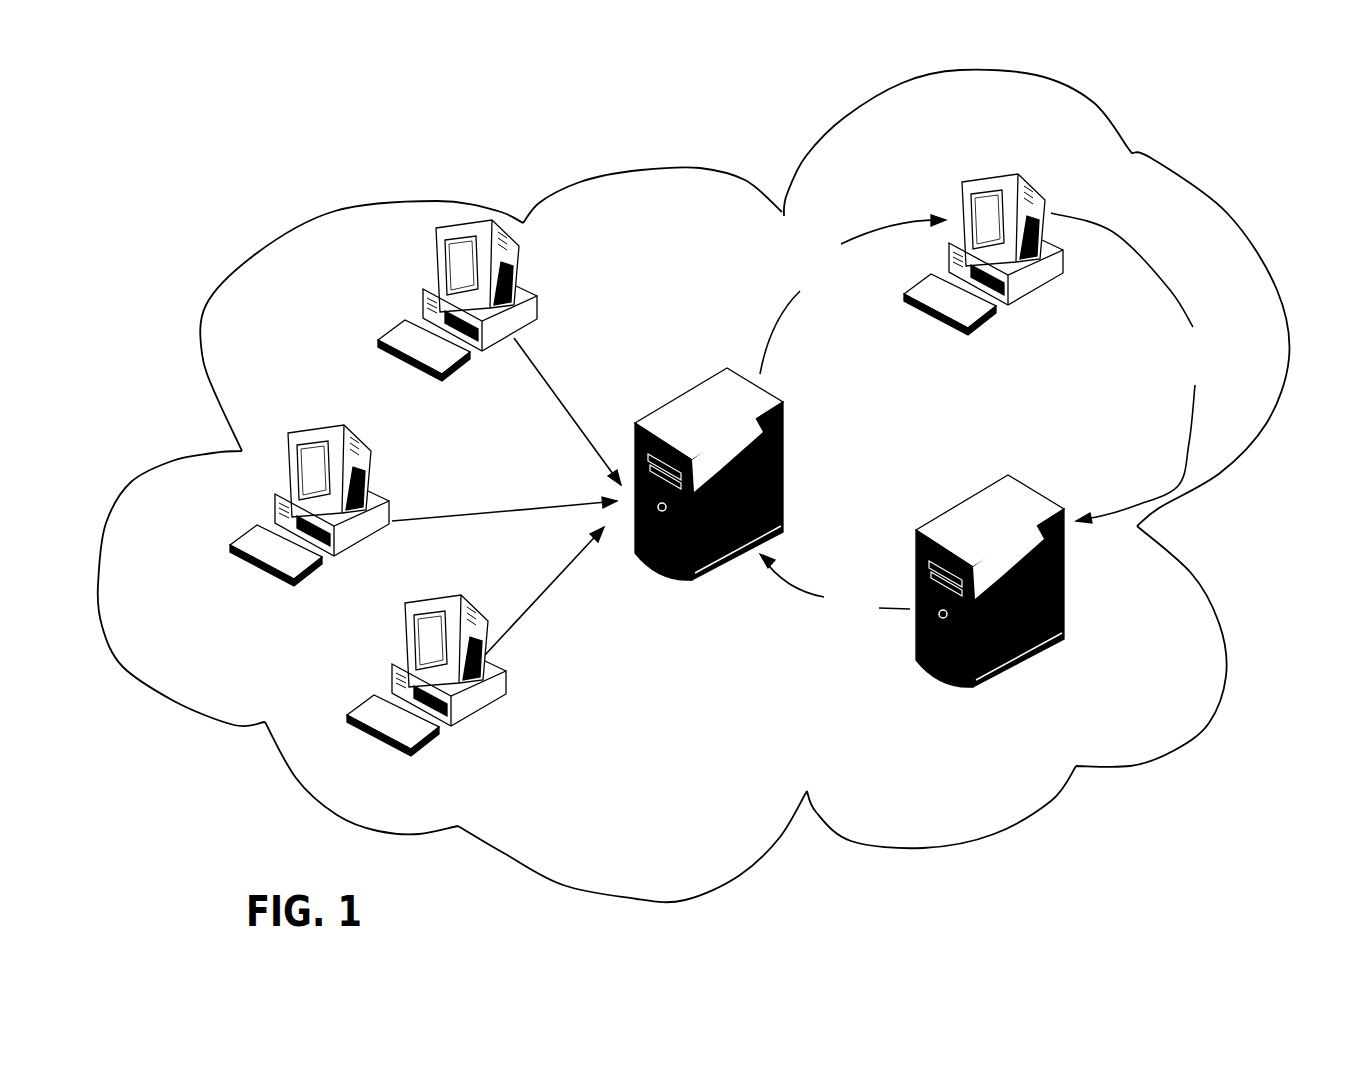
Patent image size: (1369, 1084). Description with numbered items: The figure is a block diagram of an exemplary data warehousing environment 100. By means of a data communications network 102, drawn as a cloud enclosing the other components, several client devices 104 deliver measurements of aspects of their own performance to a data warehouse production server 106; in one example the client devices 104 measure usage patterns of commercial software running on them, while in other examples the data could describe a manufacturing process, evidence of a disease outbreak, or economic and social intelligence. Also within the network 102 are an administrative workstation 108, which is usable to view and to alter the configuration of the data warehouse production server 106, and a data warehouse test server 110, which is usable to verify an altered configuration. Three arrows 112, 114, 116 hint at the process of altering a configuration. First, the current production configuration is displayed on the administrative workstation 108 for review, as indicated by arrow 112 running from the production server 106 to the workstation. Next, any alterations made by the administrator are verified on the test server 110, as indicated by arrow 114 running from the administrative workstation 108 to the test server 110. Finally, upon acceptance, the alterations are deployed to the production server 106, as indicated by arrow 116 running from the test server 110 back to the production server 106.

The data warehousing environment 100 is at (598, 119).
The data communications network 102 is at (1011, 152).
The client device 104 is at (383, 521).
The data warehouse production server 106 is at (711, 524).
The administrative workstation 108 is at (983, 304).
The data warehouse test server 110 is at (987, 632).
The arrow 112 is at (853, 294).
The arrow 114 is at (1138, 368).
The arrow 116 is at (835, 594).